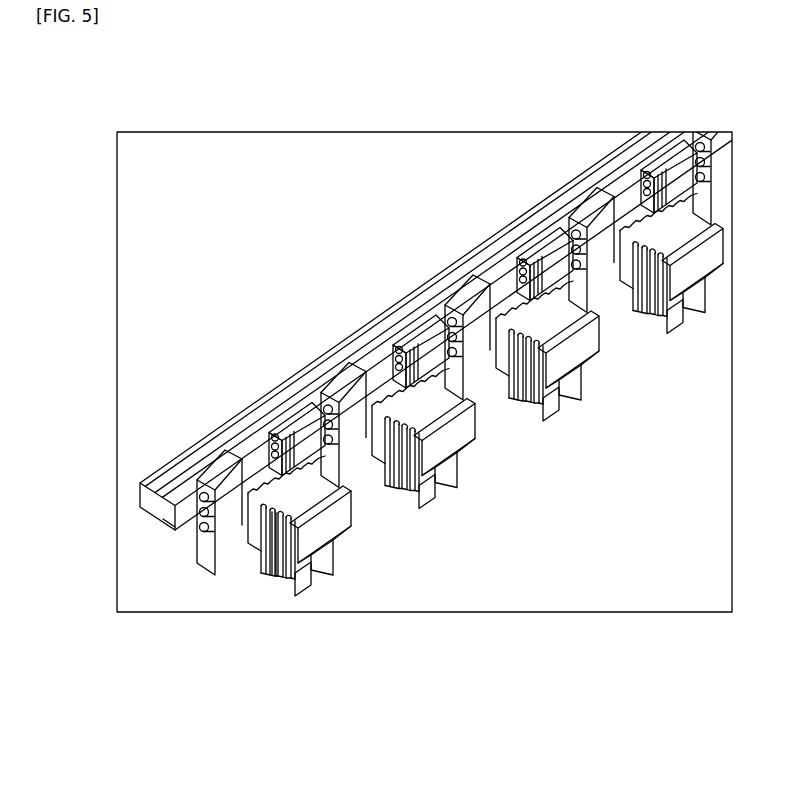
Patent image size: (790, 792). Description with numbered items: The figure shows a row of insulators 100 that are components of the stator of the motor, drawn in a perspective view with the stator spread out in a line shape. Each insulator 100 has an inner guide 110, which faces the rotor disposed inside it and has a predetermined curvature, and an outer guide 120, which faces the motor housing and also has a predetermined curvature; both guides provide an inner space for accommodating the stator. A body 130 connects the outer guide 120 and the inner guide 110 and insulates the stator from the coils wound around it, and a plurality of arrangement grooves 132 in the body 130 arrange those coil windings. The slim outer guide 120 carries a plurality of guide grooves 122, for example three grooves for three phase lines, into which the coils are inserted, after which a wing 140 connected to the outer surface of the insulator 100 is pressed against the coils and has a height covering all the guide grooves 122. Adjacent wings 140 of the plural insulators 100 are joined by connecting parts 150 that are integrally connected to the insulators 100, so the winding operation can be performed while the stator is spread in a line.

The insulator 100 is at (101, 150).
The inner guide 110 is at (318, 530).
The outer guide 120 is at (538, 242).
The guide groove 122 is at (193, 497).
The body 130 is at (270, 553).
The arrangement groove 132 is at (280, 550).
The wing 140 is at (437, 298).
The connecting part 150 is at (250, 397).